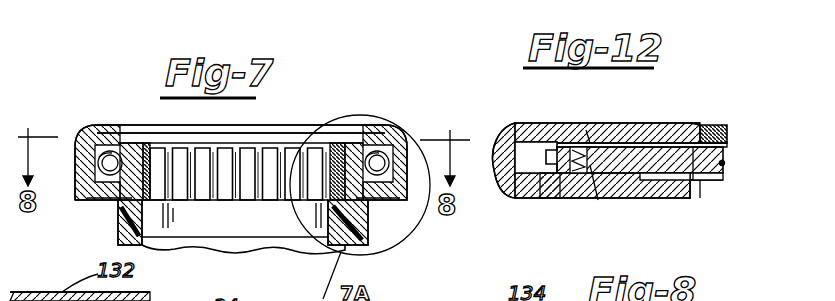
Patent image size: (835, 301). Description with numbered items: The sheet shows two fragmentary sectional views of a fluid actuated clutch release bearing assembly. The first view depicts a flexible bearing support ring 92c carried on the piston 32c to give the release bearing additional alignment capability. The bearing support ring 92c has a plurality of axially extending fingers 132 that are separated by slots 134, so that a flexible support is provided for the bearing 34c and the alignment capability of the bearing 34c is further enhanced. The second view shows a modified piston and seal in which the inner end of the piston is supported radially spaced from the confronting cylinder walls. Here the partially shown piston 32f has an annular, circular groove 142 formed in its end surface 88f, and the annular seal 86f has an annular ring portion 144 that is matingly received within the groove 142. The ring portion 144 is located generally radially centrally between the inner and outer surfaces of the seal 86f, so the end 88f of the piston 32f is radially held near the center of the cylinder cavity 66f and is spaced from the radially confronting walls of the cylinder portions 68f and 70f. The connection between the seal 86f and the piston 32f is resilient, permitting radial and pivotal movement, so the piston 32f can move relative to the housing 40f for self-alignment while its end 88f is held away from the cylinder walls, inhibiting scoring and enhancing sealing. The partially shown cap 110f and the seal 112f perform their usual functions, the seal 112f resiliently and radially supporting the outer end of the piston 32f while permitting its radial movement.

In FIG. 7, the bearing 34c is at (372, 118).
In FIG. 7, the fingers 132 is at (240, 152).
In FIG. 7, the slots 134 is at (283, 152).
In FIG. 7, the bearing support ring 92c is at (184, 156).
In FIG. 7, the piston 32c is at (370, 227).
In FIG. 12, the cylinder portion 70f is at (640, 126).
In FIG. 12, the end surface 88f is at (496, 156).
In FIG. 12, the piston 32f is at (687, 188).
In FIG. 12, the annular seal 86f is at (563, 128).
In FIG. 12, the groove 142 is at (589, 130).
In FIG. 12, the cap 110f is at (737, 130).
In FIG. 12, the seal 112f is at (724, 178).
In FIG. 12, the housing 40f is at (494, 212).
In FIG. 12, the cylinder portion 68f is at (557, 194).
In FIG. 12, the ring portion 144 is at (598, 200).
In FIG. 12, the cylinder cavity 66f is at (652, 196).